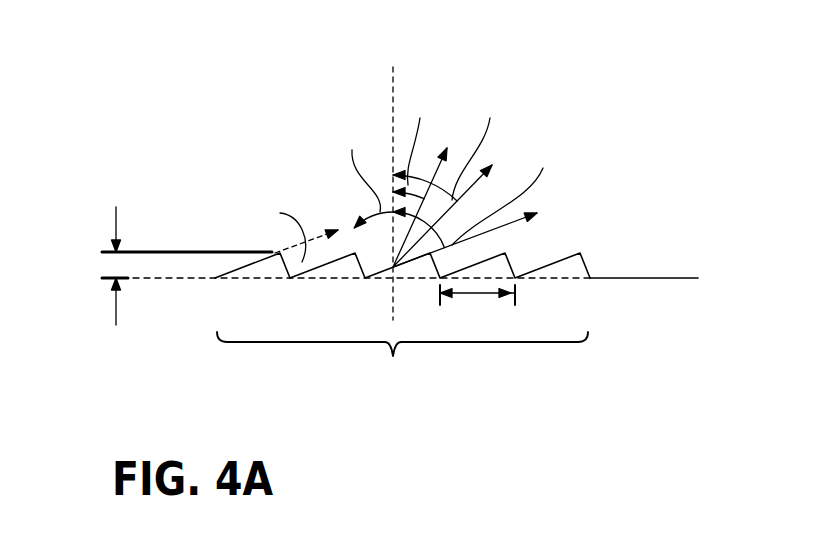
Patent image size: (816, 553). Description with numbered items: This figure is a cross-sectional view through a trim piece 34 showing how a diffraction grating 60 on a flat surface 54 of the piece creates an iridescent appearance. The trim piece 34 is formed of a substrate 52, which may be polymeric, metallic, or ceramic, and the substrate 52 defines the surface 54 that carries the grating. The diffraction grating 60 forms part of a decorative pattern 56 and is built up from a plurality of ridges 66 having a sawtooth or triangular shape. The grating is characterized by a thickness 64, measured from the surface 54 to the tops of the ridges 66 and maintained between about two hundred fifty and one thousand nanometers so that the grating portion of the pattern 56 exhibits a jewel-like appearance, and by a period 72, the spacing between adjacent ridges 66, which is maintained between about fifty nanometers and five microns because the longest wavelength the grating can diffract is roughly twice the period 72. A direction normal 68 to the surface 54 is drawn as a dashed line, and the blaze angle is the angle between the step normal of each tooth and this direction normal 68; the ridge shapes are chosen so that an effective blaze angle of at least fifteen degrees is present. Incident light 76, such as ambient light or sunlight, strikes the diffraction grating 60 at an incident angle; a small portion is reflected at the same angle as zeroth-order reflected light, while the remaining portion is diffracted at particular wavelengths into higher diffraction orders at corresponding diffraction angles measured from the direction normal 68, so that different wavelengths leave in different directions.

The trim piece 34 is at (517, 90).
The substrate 52 is at (674, 351).
The surface 54 is at (648, 275).
The pattern 56 is at (295, 105).
The diffraction grating 60 is at (402, 317).
The thickness 64 is at (115, 225).
The ridges 66 is at (583, 257).
The direction normal 68 is at (393, 92).
The period 72 is at (463, 296).
The incident light 76 is at (391, 265).